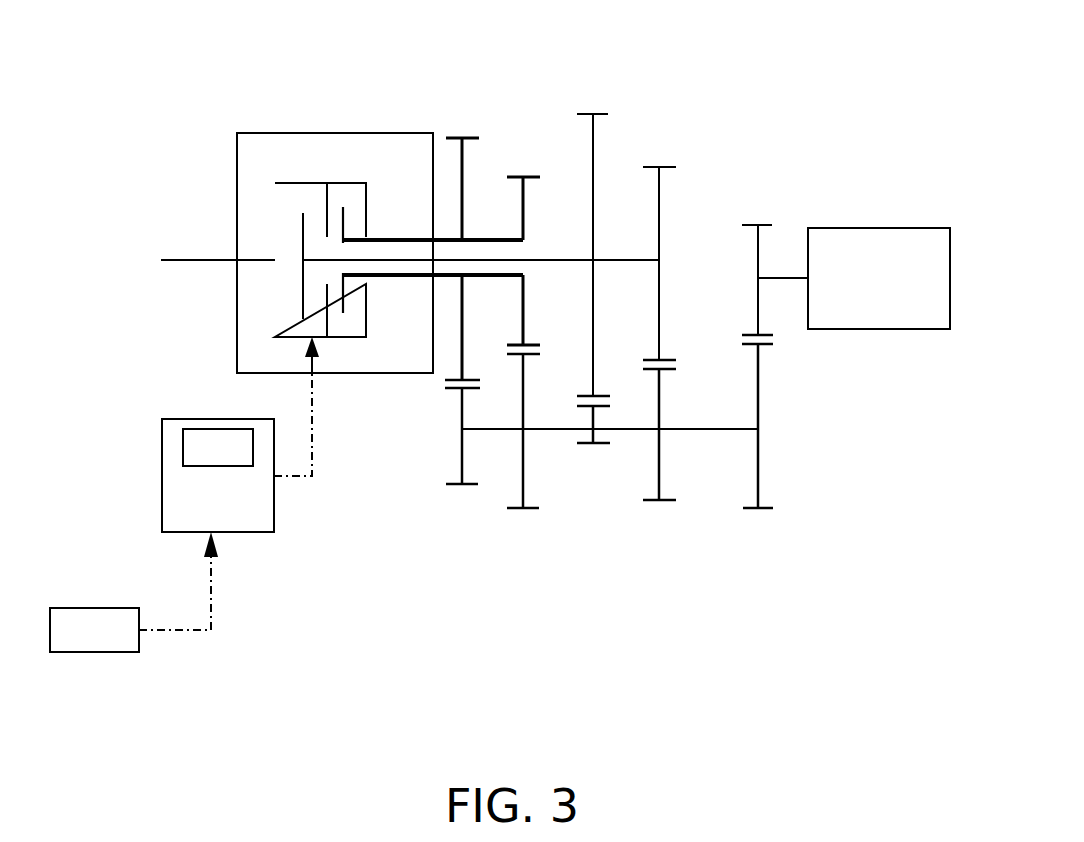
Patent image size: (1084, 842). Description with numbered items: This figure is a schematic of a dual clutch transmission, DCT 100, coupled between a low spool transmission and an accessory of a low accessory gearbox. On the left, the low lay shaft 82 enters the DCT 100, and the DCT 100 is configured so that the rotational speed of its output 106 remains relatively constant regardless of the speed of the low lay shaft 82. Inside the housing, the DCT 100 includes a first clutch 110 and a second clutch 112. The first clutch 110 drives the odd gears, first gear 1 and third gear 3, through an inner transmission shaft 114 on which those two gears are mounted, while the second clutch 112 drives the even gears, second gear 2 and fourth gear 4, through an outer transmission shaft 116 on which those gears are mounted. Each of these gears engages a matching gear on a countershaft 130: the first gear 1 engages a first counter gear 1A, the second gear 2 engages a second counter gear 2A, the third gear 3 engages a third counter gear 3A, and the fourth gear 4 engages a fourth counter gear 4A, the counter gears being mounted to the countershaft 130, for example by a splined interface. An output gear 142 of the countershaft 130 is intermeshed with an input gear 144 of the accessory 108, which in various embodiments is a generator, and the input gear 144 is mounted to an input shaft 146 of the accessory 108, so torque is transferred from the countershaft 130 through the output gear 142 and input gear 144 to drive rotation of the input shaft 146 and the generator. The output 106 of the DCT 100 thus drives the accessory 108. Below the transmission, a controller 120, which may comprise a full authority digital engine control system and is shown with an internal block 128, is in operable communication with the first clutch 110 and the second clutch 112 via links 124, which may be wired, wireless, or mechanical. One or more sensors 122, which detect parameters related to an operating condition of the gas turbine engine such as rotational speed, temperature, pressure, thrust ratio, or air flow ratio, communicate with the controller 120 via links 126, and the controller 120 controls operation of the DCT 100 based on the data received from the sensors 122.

The dual clutch transmission 100 is at (190, 90).
The low lay shaft 82 is at (190, 259).
The first clutch 110 is at (290, 192).
The second clutch 112 is at (350, 192).
The inner transmission shaft 114 is at (396, 264).
The outer transmission shaft 116 is at (392, 238).
The first gear 1 is at (592, 241).
The second gear 2 is at (462, 246).
The third gear 3 is at (659, 249).
The fourth gear 4 is at (523, 246).
The first counter gear 1A is at (593, 437).
The second counter gear 2A is at (462, 449).
The third counter gear 3A is at (659, 447).
The fourth counter gear 4A is at (523, 449).
The countershaft 130 is at (710, 430).
The output 106 is at (787, 429).
The output gear 142 is at (760, 440).
The input gear 144 is at (757, 263).
The input shaft 146 is at (787, 278).
The accessory 108 is at (879, 278).
The controller 120 is at (218, 475).
The memory 128 is at (218, 447).
The sensor 122 is at (94, 630).
The links 124 is at (312, 438).
The links 126 is at (212, 623).